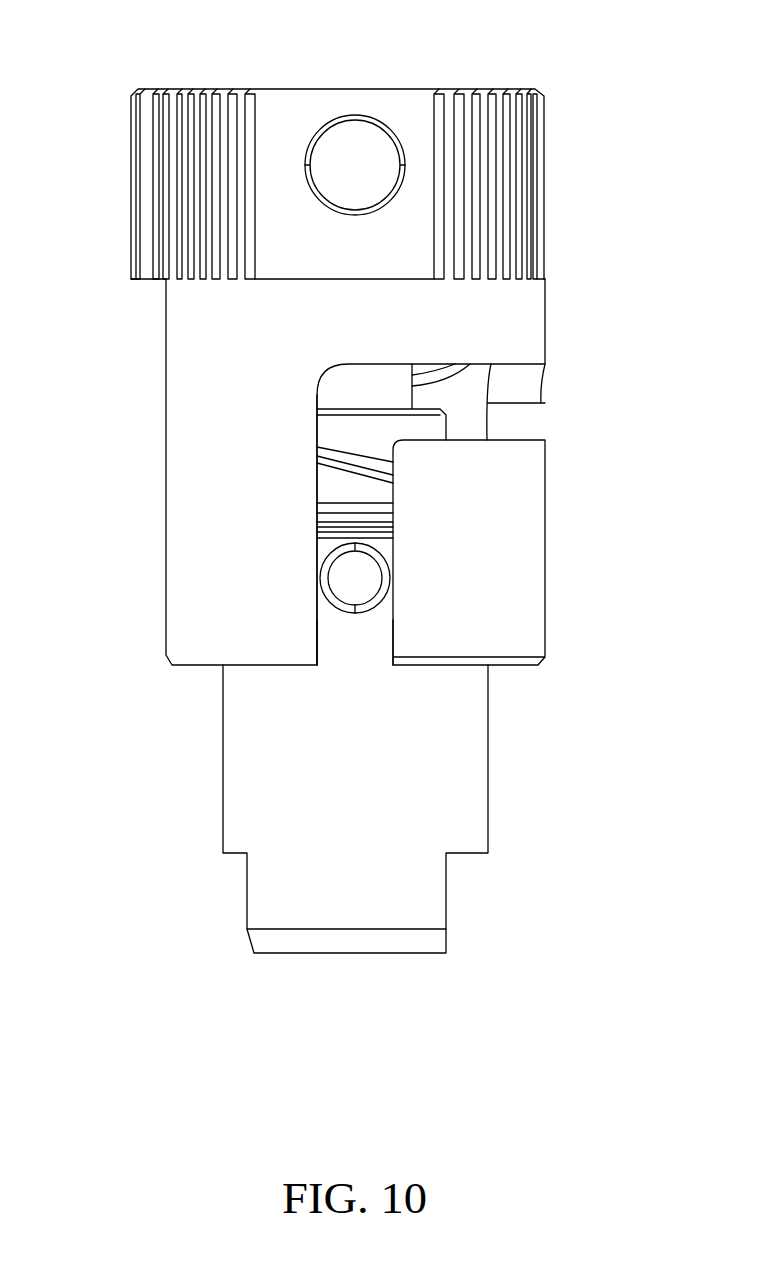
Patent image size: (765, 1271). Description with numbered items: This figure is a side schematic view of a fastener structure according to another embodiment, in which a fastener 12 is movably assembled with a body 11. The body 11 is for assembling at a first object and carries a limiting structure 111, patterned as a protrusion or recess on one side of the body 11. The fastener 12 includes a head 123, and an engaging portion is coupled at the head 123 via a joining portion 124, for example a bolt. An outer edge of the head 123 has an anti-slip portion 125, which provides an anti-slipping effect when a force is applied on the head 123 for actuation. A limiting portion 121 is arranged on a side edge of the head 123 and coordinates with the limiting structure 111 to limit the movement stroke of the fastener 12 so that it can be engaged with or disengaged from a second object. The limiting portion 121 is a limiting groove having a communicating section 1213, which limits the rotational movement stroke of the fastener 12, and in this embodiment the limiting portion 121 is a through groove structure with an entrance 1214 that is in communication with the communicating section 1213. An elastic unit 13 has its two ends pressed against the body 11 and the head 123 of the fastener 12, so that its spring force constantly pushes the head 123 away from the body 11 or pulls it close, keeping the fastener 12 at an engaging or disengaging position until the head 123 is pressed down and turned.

The fastener 12 is at (522, 78).
The head 123 is at (230, 89).
The joining portion 124 is at (356, 155).
The anti-slip portion 125 is at (464, 135).
The communicating section 1213 is at (385, 394).
The elastic unit 13 is at (330, 455).
The limiting portion 121 is at (317, 492).
The limiting structure 111 is at (355, 578).
The entrance 1214 is at (365, 668).
The body 11 is at (267, 812).